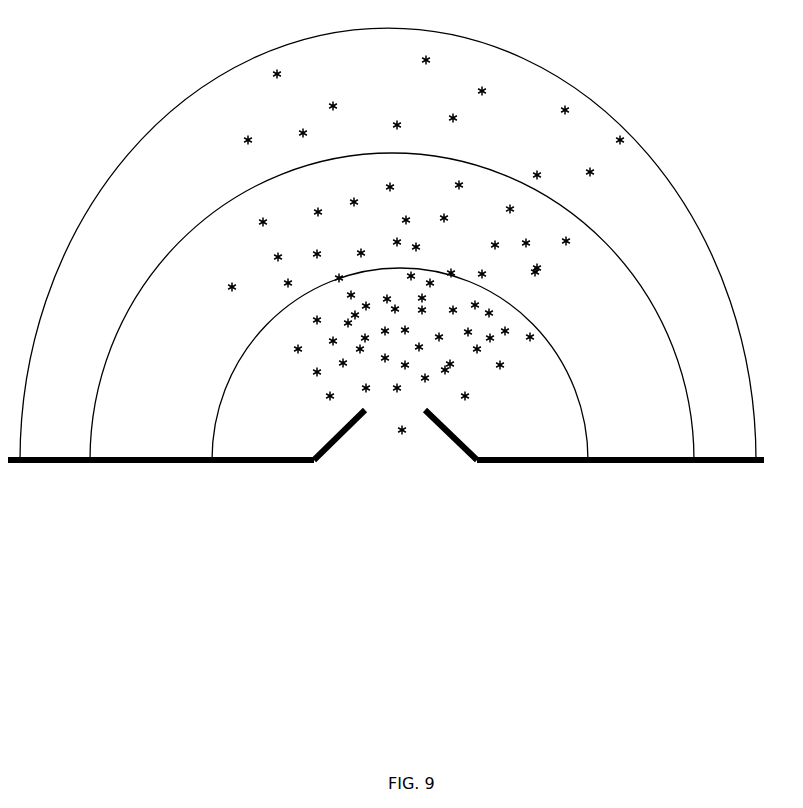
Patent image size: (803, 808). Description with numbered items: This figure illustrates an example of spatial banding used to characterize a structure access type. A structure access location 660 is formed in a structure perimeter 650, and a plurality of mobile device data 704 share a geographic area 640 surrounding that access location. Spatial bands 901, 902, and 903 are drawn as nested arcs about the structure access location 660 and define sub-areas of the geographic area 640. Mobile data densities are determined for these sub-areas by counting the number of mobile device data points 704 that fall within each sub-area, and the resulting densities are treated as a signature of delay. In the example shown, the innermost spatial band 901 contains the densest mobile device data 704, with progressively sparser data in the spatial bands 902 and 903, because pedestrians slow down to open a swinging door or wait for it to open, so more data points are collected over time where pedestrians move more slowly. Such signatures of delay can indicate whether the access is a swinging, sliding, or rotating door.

The geographic area 640 is at (93, 40).
The spatial band 903 is at (253, 58).
The spatial band 902 is at (207, 220).
The spatial band 901 is at (215, 413).
The mobile device data 704 is at (292, 125).
The structure perimeter 650 is at (77, 465).
The structure access location 660 is at (320, 468).